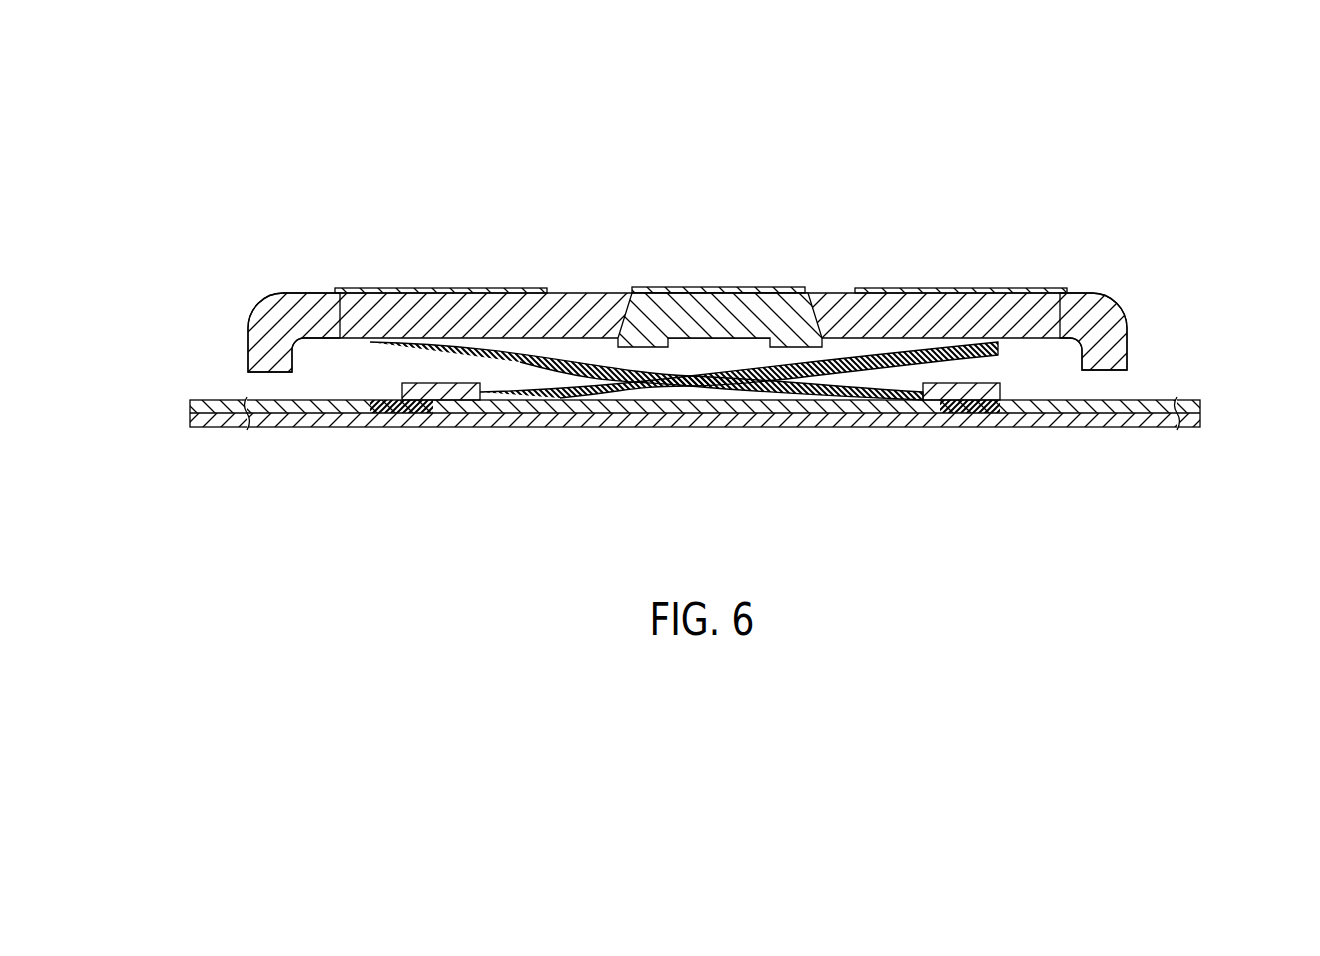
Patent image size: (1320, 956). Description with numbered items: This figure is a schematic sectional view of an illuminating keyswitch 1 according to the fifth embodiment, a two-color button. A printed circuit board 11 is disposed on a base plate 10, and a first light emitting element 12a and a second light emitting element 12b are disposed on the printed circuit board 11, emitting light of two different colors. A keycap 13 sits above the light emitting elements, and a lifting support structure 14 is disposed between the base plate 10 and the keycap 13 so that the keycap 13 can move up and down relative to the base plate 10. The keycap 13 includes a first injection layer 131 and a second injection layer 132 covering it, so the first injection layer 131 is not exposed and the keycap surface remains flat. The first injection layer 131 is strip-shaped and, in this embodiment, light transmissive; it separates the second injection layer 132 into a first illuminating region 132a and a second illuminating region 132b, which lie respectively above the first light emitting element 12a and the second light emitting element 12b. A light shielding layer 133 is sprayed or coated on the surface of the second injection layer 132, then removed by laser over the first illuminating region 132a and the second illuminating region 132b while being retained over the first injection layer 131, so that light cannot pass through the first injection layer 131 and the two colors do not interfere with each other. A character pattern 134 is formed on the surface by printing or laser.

The illuminating keyswitch 1 is at (258, 195).
The base plate 10 is at (830, 427).
The printed circuit board 11 is at (1090, 407).
The first light emitting element 12a is at (1000, 392).
The second light emitting element 12b is at (500, 398).
The keycap 13 is at (240, 276).
The first injection layer 131 is at (720, 297).
The second injection layer 132 is at (1150, 375).
The first illuminating region 132a is at (1093, 293).
The second illuminating region 132b is at (333, 325).
The light shielding layer 133 is at (795, 288).
The character pattern 134 is at (440, 287).
The lifting support structure 14 is at (692, 399).